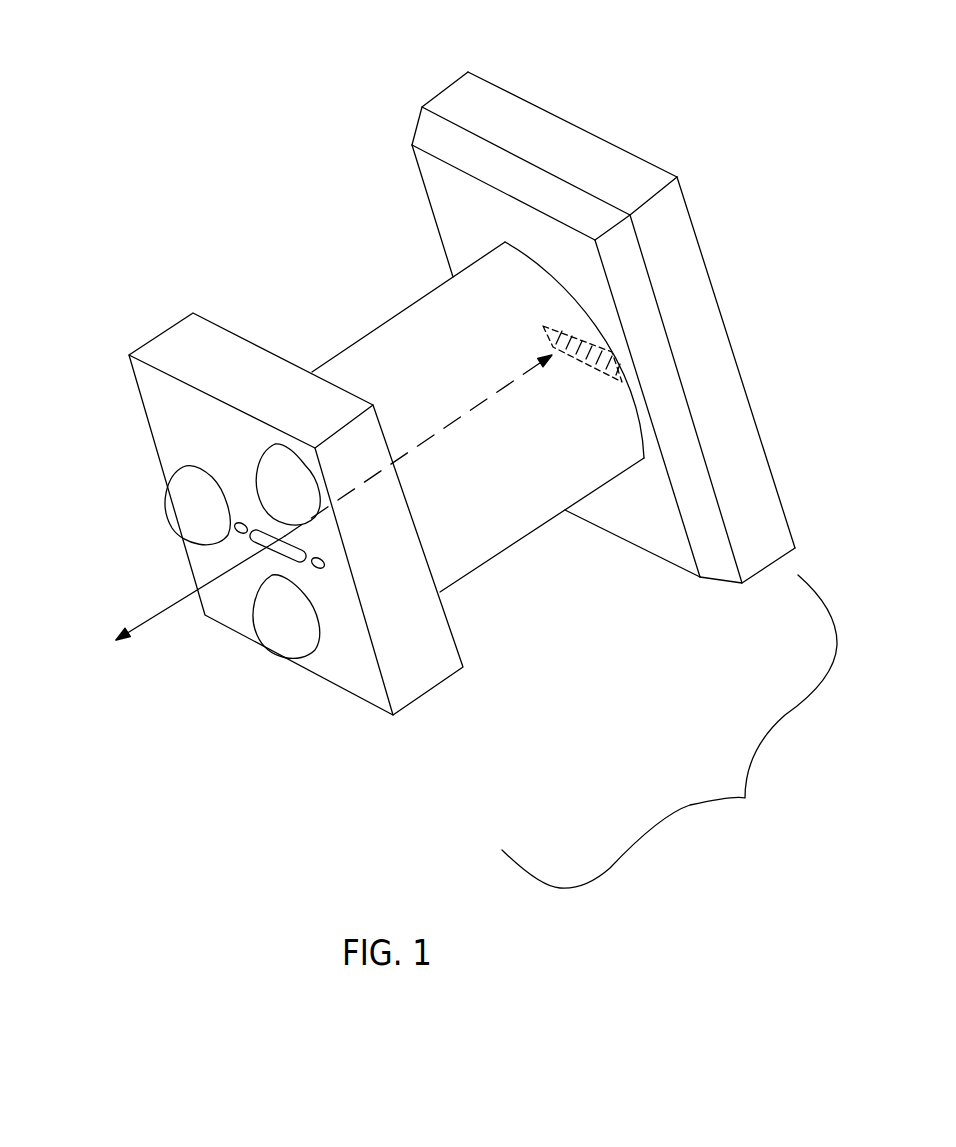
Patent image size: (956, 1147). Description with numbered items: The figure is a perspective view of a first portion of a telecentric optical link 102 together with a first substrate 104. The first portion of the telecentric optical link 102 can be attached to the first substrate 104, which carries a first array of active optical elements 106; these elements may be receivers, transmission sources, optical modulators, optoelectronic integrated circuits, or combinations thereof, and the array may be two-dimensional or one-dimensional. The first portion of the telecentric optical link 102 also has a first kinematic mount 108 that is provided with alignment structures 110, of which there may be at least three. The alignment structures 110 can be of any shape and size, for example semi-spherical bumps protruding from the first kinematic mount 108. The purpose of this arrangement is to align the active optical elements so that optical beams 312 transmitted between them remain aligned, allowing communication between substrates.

The first portion of a telecentric optical link 102 is at (669, 731).
The first substrate 104 is at (467, 108).
The first array of active optical elements 106 is at (545, 333).
The first kinematic mount 108 is at (173, 340).
The alignment structures 110 is at (280, 495).
The optical beams 312 is at (482, 400).